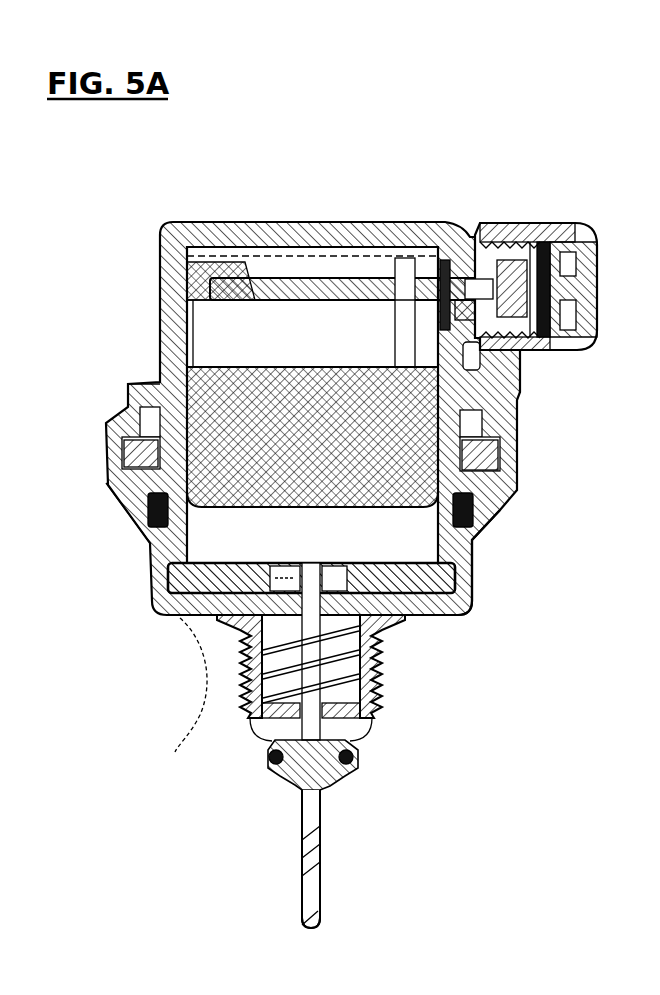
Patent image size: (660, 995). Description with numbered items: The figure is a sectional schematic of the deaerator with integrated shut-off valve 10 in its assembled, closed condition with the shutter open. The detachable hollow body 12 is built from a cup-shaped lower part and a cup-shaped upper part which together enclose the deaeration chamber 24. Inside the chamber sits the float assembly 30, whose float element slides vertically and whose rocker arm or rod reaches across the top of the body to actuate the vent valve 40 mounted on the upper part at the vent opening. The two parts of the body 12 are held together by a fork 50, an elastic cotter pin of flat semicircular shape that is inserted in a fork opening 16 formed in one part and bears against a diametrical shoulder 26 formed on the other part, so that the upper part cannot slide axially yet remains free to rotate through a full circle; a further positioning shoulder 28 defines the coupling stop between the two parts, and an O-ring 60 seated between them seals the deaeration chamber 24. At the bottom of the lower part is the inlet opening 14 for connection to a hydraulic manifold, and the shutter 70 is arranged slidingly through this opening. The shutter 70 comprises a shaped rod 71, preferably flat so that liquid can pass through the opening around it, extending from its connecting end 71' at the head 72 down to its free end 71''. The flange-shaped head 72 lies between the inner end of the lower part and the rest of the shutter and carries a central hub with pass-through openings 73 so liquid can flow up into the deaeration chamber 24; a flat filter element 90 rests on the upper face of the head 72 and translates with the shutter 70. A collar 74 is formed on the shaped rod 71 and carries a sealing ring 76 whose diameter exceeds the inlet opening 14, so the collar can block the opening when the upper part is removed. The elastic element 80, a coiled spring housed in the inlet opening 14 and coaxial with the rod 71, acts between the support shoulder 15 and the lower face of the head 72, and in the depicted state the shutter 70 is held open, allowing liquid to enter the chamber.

The deaerator with integrated shut-off valve 10 is at (430, 160).
The hollow body 12 is at (503, 512).
The inlet opening 14 is at (352, 676).
The support shoulder 15 is at (350, 650).
The fork opening 16 is at (497, 459).
The deaeration chamber 24 is at (311, 343).
The diametrical shoulder 26 is at (122, 488).
The positioning shoulder 28 is at (147, 382).
The float assembly 30 is at (282, 284).
The vent valve 40 is at (588, 226).
The fork 50 is at (114, 452).
The O-ring 60 is at (138, 517).
The shutter 70 is at (295, 828).
The shaped rod 71 is at (377, 860).
The connecting end 71' is at (164, 665).
The free end 71'' is at (221, 932).
The head 72 is at (470, 592).
The pass-through openings 73 is at (187, 616).
The collar 74 is at (350, 768).
The sealing ring 76 is at (268, 741).
The elastic element 80 is at (242, 640).
The filter element 90 is at (470, 558).